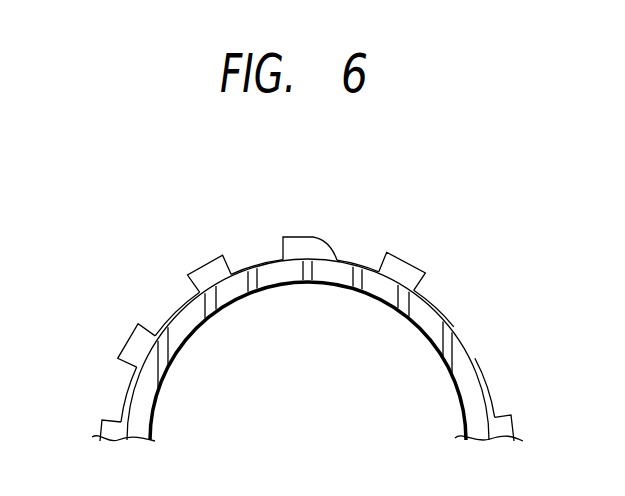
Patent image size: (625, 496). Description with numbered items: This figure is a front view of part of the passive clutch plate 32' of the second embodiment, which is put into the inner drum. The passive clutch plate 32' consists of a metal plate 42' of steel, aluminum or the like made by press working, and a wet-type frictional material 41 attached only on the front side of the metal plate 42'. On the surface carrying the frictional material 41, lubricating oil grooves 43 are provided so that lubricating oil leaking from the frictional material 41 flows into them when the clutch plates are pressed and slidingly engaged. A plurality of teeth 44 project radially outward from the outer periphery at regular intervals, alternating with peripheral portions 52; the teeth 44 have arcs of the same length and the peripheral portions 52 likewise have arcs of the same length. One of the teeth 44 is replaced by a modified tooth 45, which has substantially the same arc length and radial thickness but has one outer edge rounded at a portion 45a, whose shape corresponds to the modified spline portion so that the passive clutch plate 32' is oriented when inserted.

The passive clutch plate 32' is at (300, 288).
The wet-type frictional material 41 is at (421, 310).
The metal plate 42' is at (396, 239).
The lubricating oil grooves 43 is at (357, 285).
The teeth 44 is at (210, 265).
The modified tooth 45 is at (298, 236).
The rounded portion 45a is at (327, 249).
The peripheral portions 52 is at (171, 307).